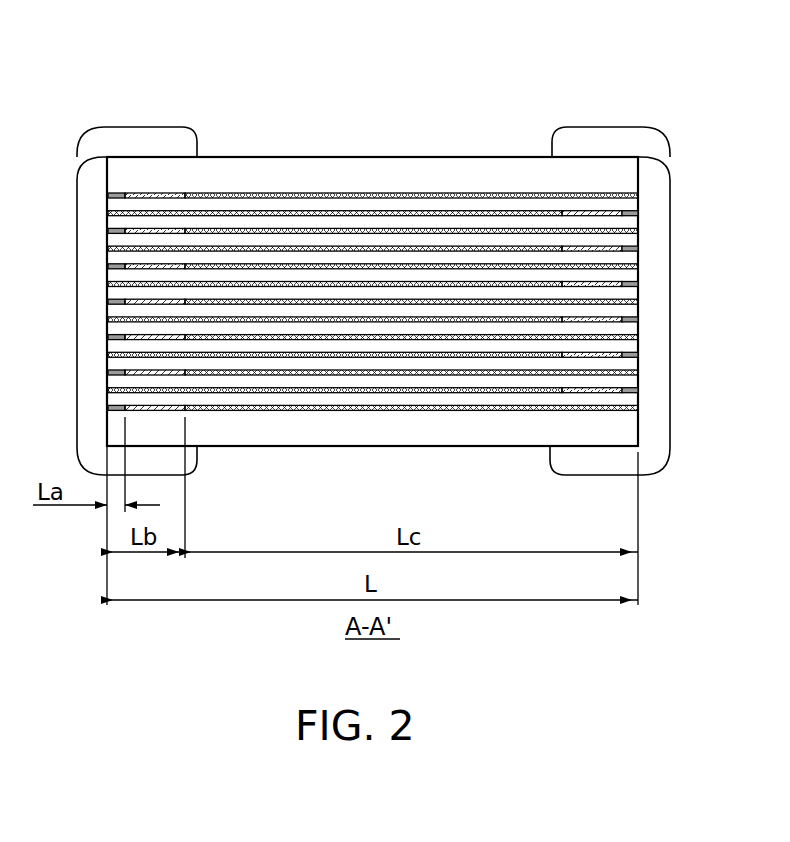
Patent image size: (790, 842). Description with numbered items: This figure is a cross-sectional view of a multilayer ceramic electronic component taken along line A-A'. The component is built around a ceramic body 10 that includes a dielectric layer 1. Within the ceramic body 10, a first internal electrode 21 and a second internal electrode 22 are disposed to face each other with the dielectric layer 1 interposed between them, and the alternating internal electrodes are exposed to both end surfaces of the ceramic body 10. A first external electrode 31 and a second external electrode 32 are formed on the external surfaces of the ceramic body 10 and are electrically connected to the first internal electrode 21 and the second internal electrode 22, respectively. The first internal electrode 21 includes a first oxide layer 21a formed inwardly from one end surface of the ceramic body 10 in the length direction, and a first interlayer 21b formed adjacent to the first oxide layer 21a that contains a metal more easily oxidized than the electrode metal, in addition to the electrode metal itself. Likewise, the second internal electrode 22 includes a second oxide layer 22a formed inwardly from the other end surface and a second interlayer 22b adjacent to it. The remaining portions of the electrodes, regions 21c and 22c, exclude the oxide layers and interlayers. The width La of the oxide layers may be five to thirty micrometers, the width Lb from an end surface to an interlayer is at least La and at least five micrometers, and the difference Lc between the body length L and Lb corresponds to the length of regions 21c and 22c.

The dielectric layer 1 is at (387, 248).
The ceramic body 10 is at (378, 157).
The first internal electrode 21 is at (373, 207).
The first oxide layer 21a is at (632, 210).
The first interlayer 21b is at (593, 210).
The region of the first internal electrode 21c is at (478, 210).
The second internal electrode 22 is at (373, 215).
The second oxide layer 22a is at (115, 192).
The second interlayer 22b is at (162, 192).
The region of the second internal electrode 22c is at (411, 235).
The first external electrode 31 is at (105, 138).
The second external electrode 32 is at (640, 138).